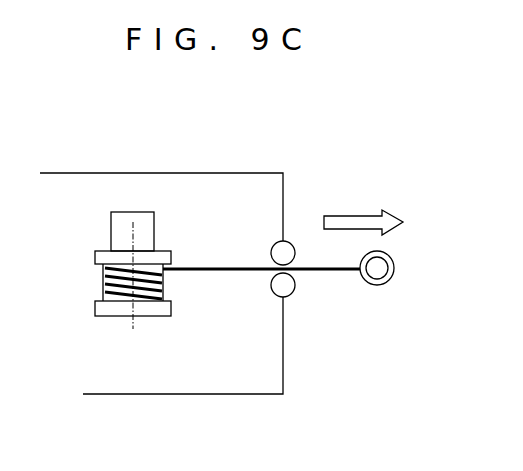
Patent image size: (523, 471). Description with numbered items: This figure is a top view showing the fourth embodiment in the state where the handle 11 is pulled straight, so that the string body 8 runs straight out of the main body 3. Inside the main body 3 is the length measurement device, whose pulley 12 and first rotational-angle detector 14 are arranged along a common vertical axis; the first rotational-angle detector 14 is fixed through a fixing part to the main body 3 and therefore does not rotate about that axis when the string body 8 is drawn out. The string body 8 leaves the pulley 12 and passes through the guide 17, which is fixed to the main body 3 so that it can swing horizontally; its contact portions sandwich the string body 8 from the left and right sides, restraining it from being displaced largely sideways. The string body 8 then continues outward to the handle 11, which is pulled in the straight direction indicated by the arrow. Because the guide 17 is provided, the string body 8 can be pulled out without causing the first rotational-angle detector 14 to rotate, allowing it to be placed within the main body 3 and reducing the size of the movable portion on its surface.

The main body 3 is at (110, 275).
The string body 8 is at (228, 272).
The handle 11 is at (370, 283).
The pulley 12 is at (153, 317).
The first rotational-angle detector 14 is at (135, 227).
The guide 17 is at (275, 242).